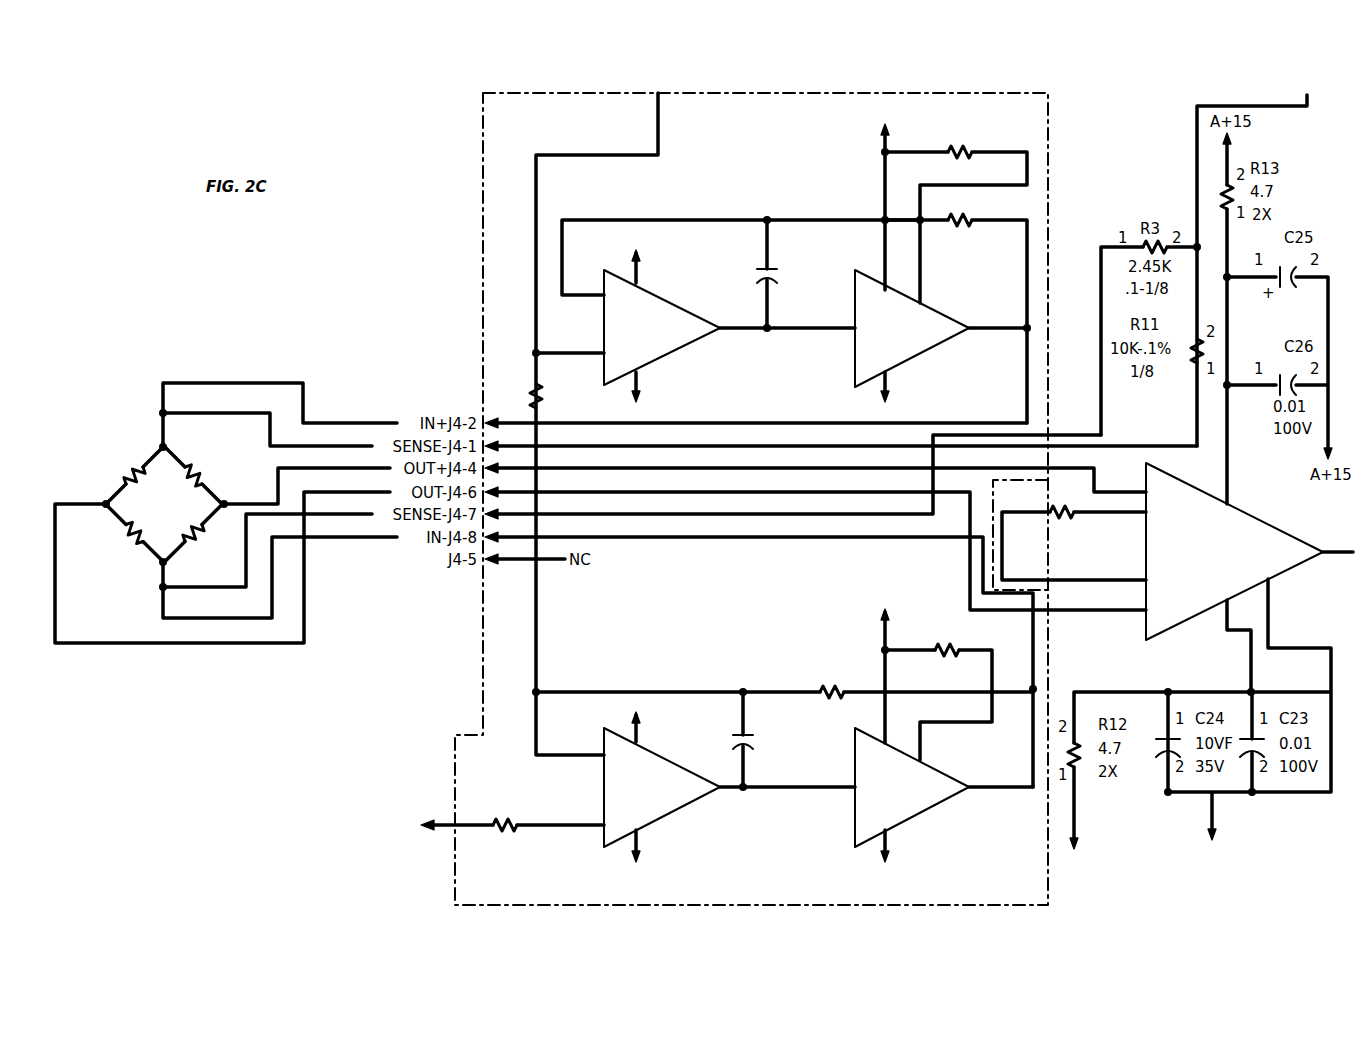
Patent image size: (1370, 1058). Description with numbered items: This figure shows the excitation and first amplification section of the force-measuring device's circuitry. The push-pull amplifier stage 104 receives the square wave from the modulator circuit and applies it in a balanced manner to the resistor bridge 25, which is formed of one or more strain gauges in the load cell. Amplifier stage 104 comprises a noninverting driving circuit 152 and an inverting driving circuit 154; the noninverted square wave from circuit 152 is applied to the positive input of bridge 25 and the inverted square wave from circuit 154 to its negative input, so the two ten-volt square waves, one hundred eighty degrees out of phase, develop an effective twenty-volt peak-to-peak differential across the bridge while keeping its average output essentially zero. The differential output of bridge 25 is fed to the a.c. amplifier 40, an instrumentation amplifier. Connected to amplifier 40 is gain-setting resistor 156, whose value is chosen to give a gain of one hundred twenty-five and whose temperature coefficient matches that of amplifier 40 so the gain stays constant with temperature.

The resistor bridge 25 is at (118, 462).
The push-pull amplifier stage 104 is at (483, 248).
The noninverting driving circuit 152 is at (792, 170).
The inverting driving circuit 154 is at (718, 622).
The gain-setting resistor 156 is at (1072, 570).
The a.c. amplifier 40 is at (1276, 598).